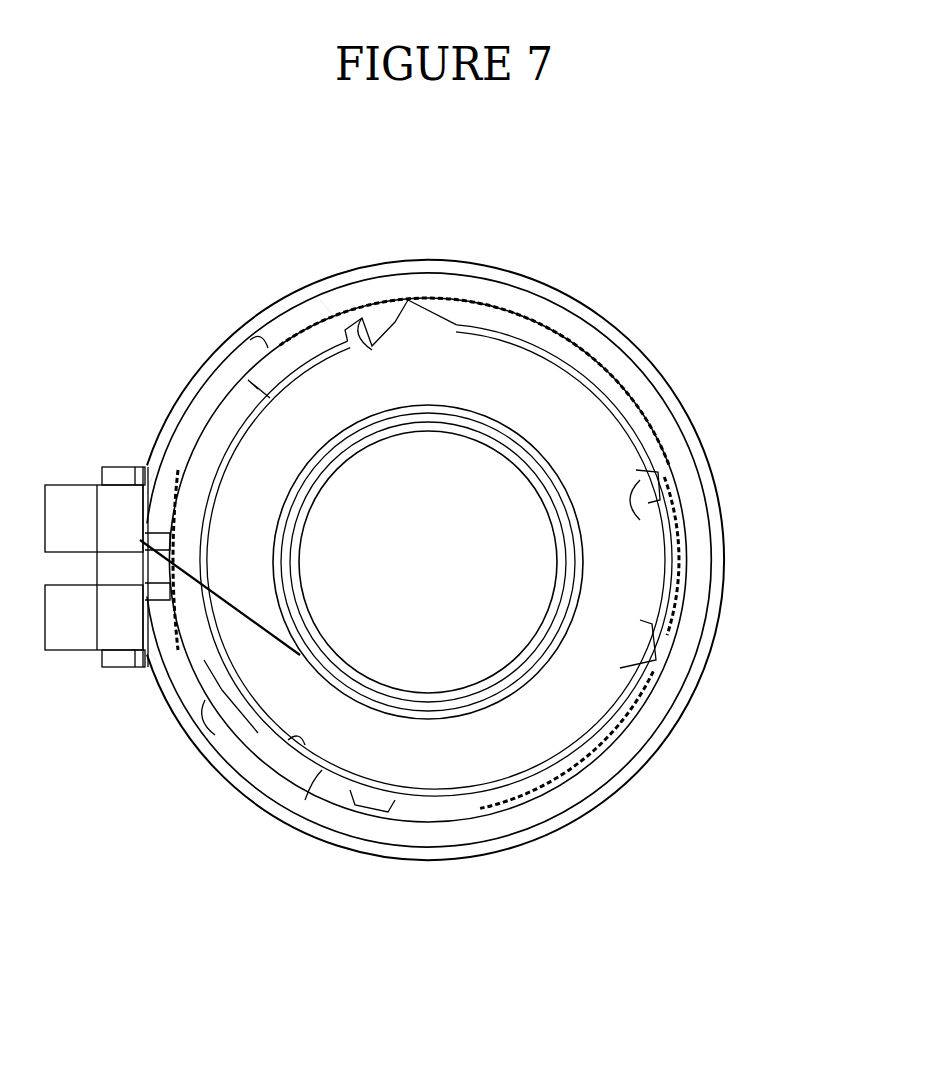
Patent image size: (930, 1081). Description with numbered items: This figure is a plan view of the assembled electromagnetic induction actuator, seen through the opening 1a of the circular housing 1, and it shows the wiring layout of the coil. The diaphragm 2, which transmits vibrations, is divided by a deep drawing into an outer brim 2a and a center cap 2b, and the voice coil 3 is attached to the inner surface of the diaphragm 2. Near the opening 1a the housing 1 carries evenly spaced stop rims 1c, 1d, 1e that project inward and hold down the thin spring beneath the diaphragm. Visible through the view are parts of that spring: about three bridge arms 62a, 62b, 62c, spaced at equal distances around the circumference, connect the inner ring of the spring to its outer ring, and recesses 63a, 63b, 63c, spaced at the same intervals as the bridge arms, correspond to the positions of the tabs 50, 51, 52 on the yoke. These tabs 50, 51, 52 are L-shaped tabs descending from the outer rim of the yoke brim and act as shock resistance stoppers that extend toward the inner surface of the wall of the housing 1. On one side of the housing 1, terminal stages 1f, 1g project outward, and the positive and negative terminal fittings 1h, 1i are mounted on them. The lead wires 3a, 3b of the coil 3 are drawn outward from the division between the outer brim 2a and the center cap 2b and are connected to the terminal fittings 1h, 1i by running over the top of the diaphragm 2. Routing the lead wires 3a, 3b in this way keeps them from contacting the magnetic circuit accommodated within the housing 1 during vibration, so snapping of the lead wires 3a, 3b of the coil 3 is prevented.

The circular housing 1 is at (492, 262).
The opening 1a is at (525, 296).
The stop rim 1c is at (680, 525).
The stop rim 1d is at (320, 810).
The stop rim 1e is at (325, 312).
The terminal stage 1f is at (110, 470).
The terminal stage 1g is at (110, 667).
The terminal fitting 1h is at (65, 490).
The terminal fitting 1i is at (65, 640).
The diaphragm 2 is at (548, 438).
The outer brim 2a is at (620, 660).
The center cap 2b is at (560, 525).
The voice coil 3 is at (240, 740).
The lead wire 3a is at (156, 468).
The lead wire 3b is at (156, 652).
The tab 50 is at (690, 578).
The tab 51 is at (290, 750).
The tab 52 is at (265, 345).
The bridge arm 62a is at (620, 400).
The bridge arm 62b is at (560, 765).
The bridge arm 62c is at (190, 700).
The recess 63a is at (650, 490).
The recess 63b is at (215, 712).
The recess 63c is at (378, 320).